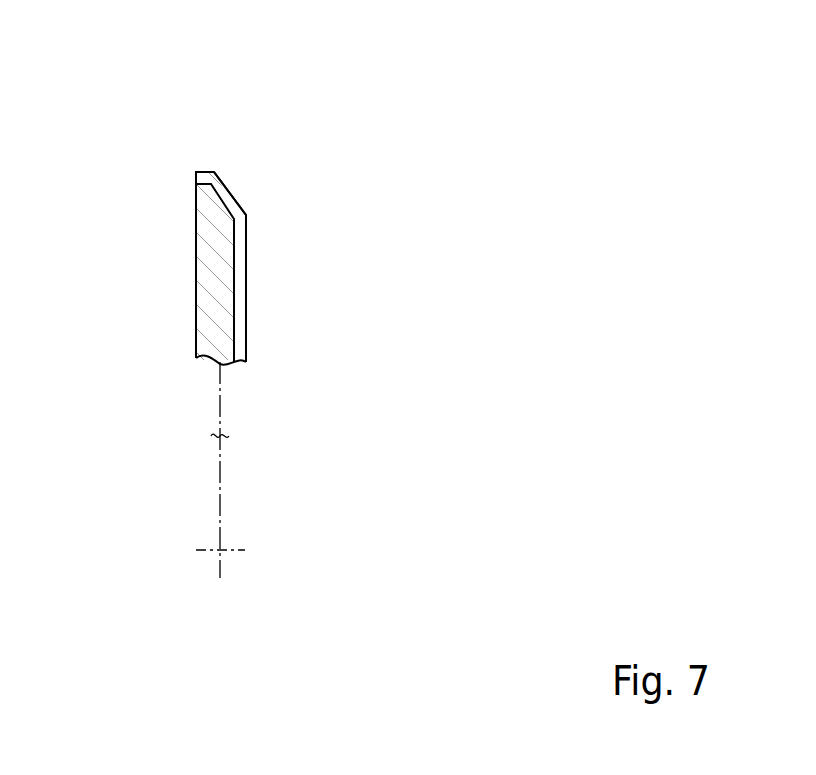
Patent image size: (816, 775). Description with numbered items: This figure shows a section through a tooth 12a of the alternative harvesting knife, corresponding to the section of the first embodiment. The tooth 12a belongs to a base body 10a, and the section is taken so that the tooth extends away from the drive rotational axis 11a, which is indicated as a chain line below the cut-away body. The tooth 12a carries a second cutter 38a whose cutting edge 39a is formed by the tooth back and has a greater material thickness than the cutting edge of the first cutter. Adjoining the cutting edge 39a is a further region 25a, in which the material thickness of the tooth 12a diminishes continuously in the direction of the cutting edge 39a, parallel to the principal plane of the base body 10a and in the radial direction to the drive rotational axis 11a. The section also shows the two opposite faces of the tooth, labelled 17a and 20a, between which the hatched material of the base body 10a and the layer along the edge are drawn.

The base body 10a is at (189, 362).
The drive rotational axis 11a is at (222, 550).
The tooth 12a is at (249, 198).
The first side face 17a is at (196, 289).
The second side face 20a is at (246, 277).
The further region 25a is at (236, 189).
The second cutter 38a is at (199, 168).
The cutting edge 39a is at (212, 173).